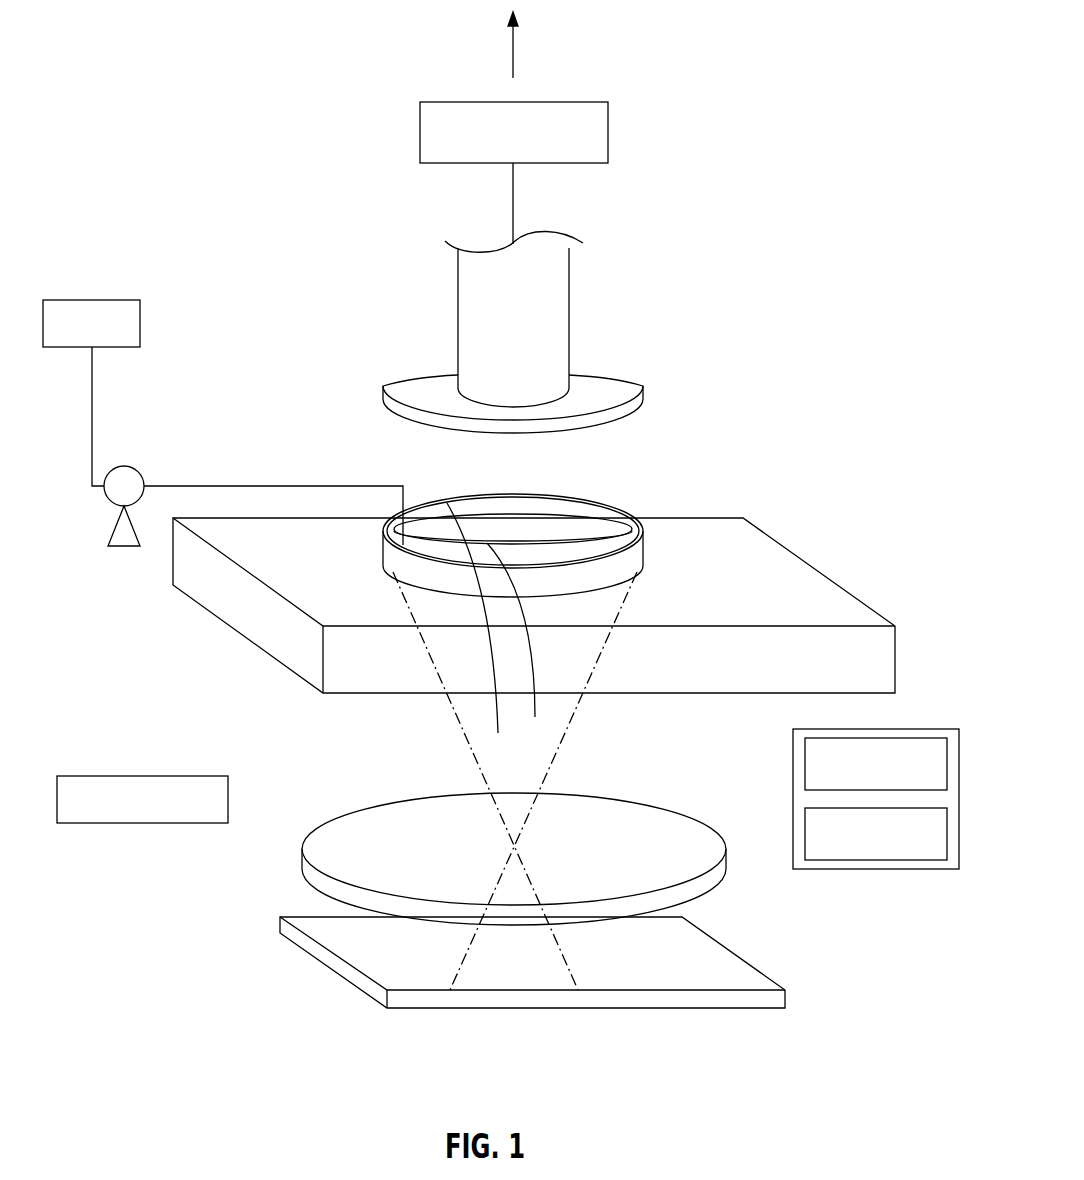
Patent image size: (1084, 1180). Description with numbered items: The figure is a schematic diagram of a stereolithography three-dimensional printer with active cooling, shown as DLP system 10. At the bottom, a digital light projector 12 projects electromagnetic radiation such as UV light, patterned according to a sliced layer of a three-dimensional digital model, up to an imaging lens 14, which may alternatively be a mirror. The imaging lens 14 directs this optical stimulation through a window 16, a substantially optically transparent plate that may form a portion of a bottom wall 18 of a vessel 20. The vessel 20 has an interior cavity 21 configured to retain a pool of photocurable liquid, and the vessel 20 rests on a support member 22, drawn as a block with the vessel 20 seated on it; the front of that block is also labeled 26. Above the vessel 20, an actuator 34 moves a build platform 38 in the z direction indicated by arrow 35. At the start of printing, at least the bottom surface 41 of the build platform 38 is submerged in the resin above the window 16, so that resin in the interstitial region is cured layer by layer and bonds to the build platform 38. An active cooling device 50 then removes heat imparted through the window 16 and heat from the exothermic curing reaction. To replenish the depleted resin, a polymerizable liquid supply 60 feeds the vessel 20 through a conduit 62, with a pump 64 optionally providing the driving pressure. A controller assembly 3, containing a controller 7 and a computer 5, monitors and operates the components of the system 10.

The arrow 35 is at (511, 52).
The DLP system 10 is at (593, 65).
The actuator 34 is at (608, 132).
The polymerizable liquid supply 60 is at (102, 300).
The pump 64 is at (128, 547).
The conduit 62 is at (178, 486).
The build platform 38 is at (617, 390).
The bottom surface 41 is at (583, 438).
The support member 22 is at (227, 607).
The aperture 26 is at (338, 628).
The bottom wall 18 is at (610, 532).
The vessel 20 is at (637, 582).
The interior cavity 21 is at (480, 635).
The window 16 is at (519, 647).
The controller assembly 3 is at (853, 818).
The controller 7 is at (802, 766).
The computer 5 is at (802, 834).
The active cooling device 50 is at (142, 832).
The imaging lens 14 is at (327, 843).
The digital light projector 12 is at (343, 938).